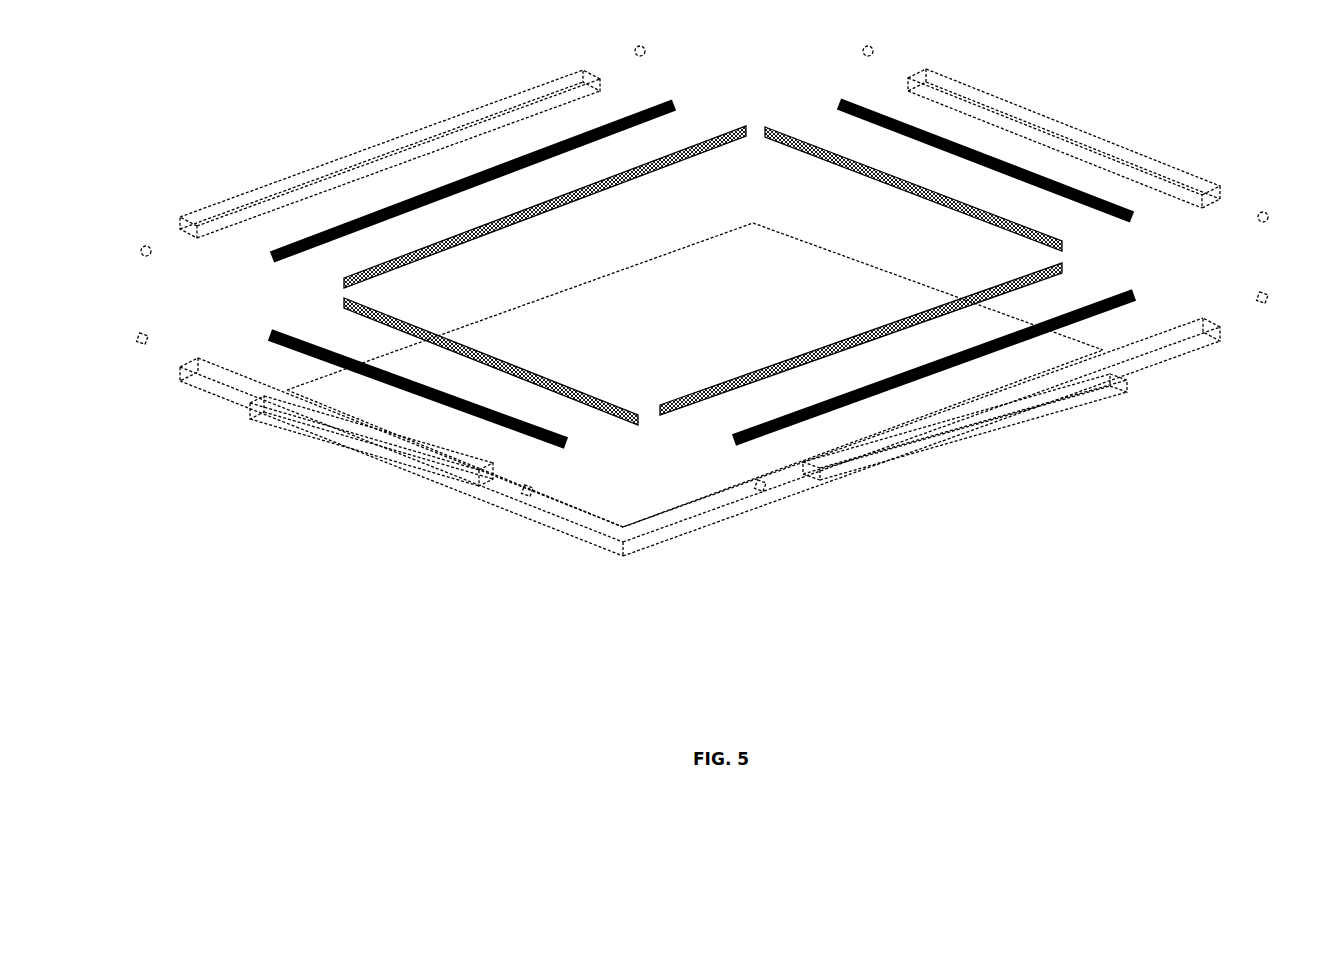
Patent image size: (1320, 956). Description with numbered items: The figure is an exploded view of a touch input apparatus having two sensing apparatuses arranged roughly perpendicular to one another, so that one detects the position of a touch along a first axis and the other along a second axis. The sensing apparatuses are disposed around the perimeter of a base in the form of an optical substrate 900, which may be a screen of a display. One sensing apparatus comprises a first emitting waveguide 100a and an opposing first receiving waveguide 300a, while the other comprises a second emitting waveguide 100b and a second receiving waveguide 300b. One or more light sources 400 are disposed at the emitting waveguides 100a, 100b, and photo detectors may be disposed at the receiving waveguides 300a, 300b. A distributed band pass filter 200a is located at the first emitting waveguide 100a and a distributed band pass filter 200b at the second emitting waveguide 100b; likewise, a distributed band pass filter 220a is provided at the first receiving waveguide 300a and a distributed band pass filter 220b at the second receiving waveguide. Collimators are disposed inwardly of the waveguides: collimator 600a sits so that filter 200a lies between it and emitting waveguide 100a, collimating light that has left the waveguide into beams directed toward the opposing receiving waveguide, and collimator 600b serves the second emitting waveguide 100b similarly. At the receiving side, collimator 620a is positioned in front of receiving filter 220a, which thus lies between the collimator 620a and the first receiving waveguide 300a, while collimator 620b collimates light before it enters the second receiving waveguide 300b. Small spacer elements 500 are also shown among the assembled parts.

The first emitting waveguide 100a is at (408, 142).
The second emitting waveguide 100b is at (1053, 125).
The distributed band pass filter 200a is at (463, 186).
The distributed band pass filter 200b is at (978, 168).
The distributed band pass filter 220a is at (940, 373).
The distributed band pass filter 220b is at (408, 393).
The first receiving waveguide 300a is at (1165, 347).
The second receiving waveguide 300b is at (205, 373).
The light source 400 is at (640, 46).
The spacer 500 is at (140, 342).
The collimator 600a is at (547, 214).
The collimator 600b is at (963, 208).
The collimator 620a is at (888, 343).
The collimator 620b is at (458, 358).
The optical substrate 900 is at (707, 355).